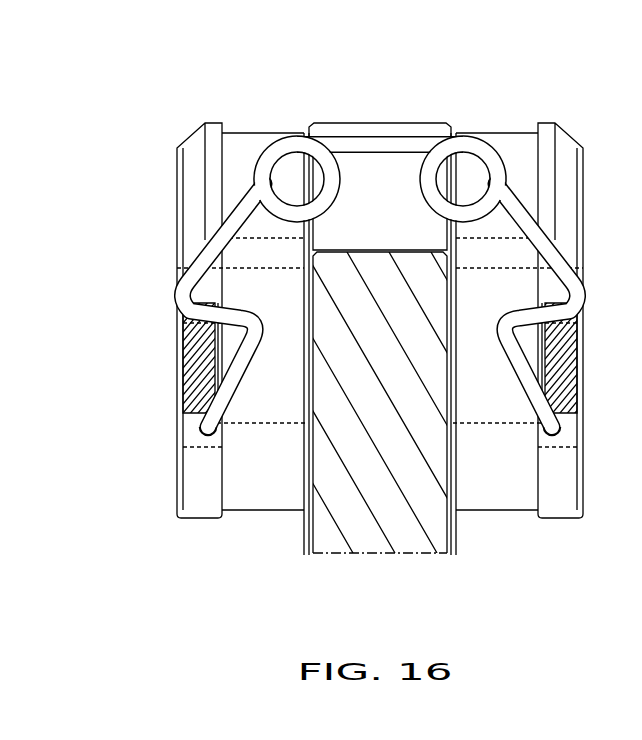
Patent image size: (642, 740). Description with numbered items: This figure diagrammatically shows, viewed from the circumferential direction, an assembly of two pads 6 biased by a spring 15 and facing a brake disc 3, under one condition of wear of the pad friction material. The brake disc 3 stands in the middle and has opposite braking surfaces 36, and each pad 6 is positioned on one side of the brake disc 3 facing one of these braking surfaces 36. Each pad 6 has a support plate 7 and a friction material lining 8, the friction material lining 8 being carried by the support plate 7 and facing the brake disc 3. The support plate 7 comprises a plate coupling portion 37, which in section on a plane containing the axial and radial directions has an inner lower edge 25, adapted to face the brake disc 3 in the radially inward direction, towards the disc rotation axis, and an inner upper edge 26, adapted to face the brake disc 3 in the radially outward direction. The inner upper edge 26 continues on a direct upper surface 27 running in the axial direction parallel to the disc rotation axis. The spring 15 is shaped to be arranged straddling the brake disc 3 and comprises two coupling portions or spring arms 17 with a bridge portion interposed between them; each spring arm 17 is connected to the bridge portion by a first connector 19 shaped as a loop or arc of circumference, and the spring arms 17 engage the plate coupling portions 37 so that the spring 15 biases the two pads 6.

The brake disc 3 is at (382, 520).
The pad 6 is at (237, 133).
The support plate 7 is at (197, 497).
The friction material lining 8 is at (252, 485).
The spring 15 is at (387, 137).
The spring arm 17 is at (250, 422).
The first connector 19 is at (275, 134).
The inner lower edge 25 is at (195, 408).
The inner upper edge 26 is at (190, 345).
The direct upper surface 27 is at (180, 340).
The braking surface 36 is at (302, 535).
The plate coupling portion 37 is at (180, 402).